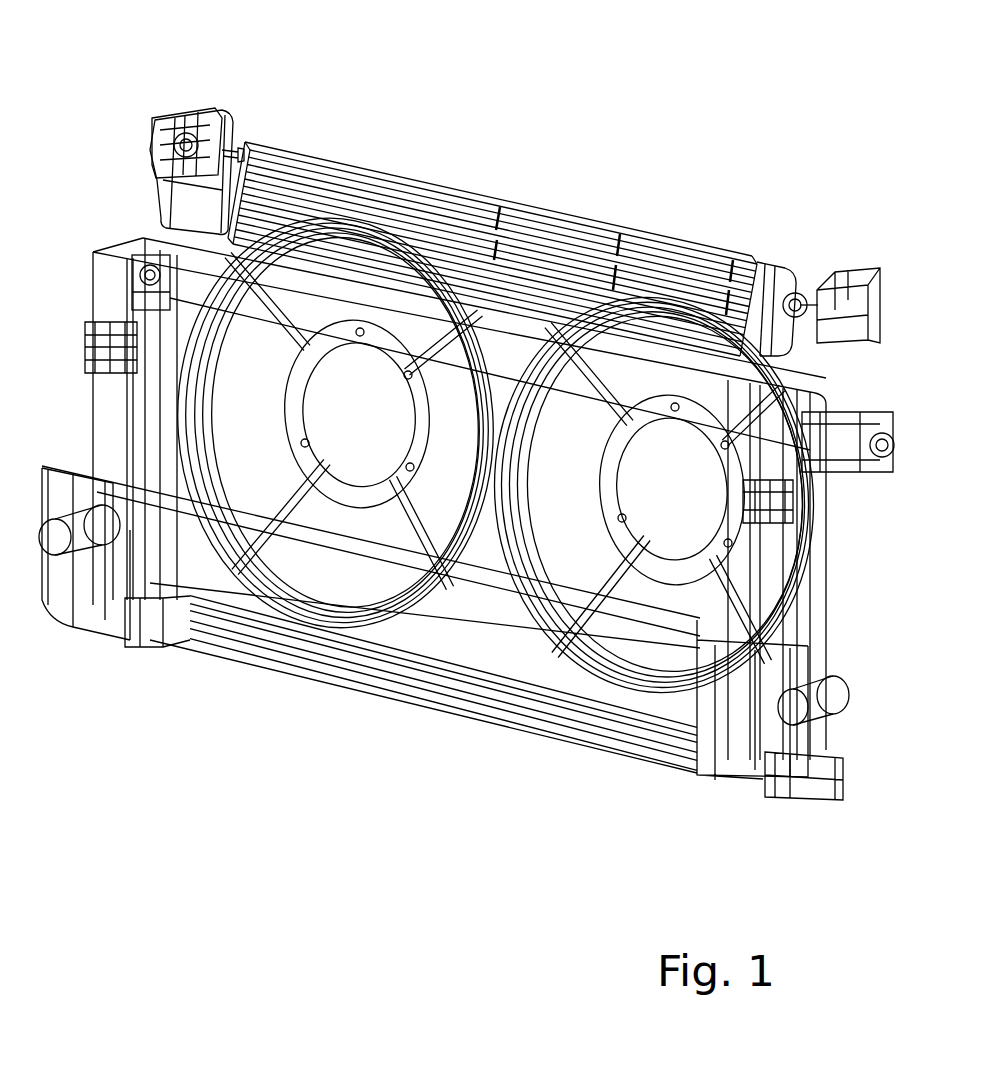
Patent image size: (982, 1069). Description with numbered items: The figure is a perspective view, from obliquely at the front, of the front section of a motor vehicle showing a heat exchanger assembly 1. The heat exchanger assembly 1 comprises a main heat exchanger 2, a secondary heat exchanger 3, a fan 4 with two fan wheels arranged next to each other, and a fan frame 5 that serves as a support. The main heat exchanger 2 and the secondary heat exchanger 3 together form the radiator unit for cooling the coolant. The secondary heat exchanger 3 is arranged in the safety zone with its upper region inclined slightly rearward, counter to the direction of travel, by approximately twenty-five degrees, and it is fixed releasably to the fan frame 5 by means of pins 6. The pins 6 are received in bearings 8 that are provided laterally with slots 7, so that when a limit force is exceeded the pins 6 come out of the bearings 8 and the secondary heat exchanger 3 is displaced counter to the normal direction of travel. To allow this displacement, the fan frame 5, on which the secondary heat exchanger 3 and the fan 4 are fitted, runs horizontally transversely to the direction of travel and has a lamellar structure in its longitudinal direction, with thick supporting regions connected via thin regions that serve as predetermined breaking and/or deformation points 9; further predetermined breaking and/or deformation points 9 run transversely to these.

The heat exchanger assembly 1 is at (183, 775).
The main heat exchanger 2 is at (497, 583).
The secondary heat exchanger 3 is at (758, 267).
The fan 4 is at (350, 437).
The fan frame 5 is at (517, 257).
The pin 6 is at (222, 150).
The slot 7 is at (205, 180).
The bearing 8 is at (158, 128).
The predetermined breaking and/or deformation point 9 is at (627, 250).